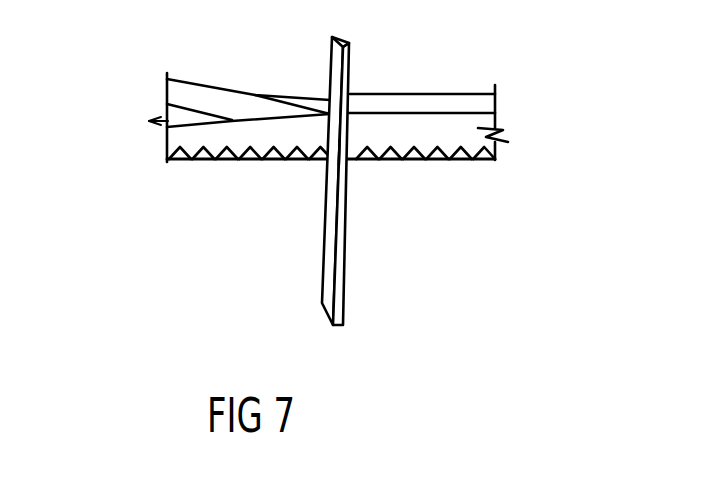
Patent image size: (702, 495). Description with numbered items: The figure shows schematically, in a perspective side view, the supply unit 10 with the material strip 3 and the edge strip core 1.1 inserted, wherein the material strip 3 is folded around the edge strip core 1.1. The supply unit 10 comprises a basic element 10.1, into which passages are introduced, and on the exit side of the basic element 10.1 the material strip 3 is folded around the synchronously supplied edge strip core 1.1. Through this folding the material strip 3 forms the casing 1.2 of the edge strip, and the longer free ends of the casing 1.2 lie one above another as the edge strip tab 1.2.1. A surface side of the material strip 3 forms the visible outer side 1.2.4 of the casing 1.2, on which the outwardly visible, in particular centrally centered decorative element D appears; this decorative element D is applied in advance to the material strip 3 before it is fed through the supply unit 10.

The edge strip core 1.1 is at (178, 94).
The casing 1.2 is at (292, 137).
The edge strip tab 1.2.1 is at (437, 110).
The visible outer side 1.2.4 is at (167, 136).
The material strip 3 is at (497, 141).
The supply unit 10 is at (343, 231).
The basic element 10.1 is at (338, 147).
The decorative element D is at (208, 158).